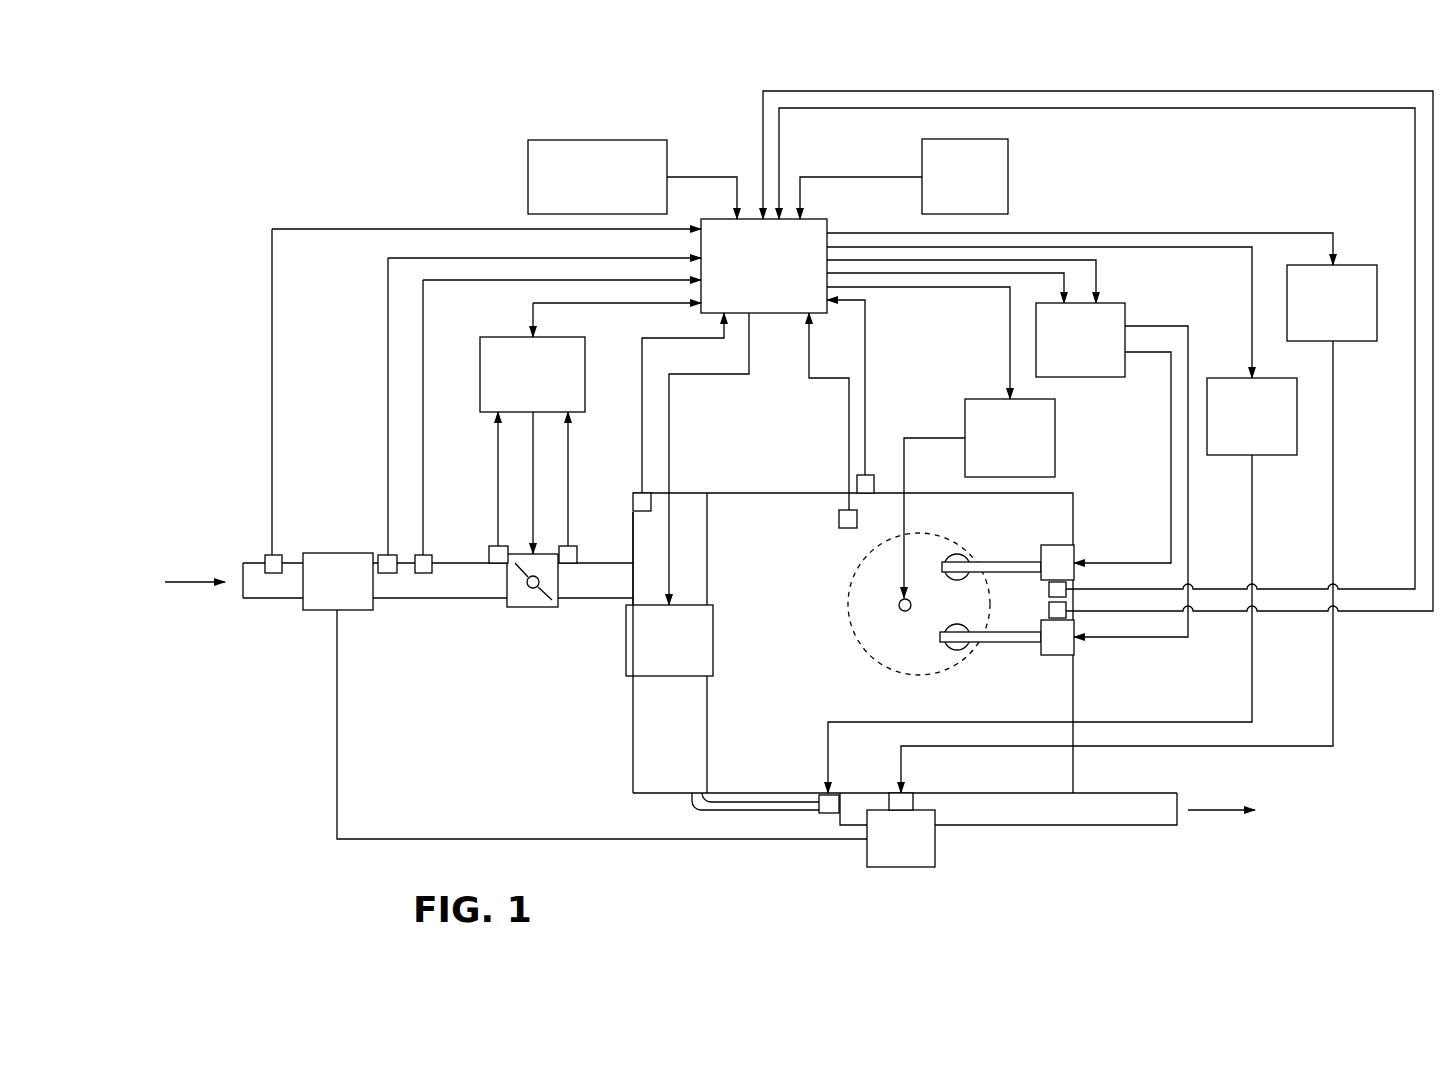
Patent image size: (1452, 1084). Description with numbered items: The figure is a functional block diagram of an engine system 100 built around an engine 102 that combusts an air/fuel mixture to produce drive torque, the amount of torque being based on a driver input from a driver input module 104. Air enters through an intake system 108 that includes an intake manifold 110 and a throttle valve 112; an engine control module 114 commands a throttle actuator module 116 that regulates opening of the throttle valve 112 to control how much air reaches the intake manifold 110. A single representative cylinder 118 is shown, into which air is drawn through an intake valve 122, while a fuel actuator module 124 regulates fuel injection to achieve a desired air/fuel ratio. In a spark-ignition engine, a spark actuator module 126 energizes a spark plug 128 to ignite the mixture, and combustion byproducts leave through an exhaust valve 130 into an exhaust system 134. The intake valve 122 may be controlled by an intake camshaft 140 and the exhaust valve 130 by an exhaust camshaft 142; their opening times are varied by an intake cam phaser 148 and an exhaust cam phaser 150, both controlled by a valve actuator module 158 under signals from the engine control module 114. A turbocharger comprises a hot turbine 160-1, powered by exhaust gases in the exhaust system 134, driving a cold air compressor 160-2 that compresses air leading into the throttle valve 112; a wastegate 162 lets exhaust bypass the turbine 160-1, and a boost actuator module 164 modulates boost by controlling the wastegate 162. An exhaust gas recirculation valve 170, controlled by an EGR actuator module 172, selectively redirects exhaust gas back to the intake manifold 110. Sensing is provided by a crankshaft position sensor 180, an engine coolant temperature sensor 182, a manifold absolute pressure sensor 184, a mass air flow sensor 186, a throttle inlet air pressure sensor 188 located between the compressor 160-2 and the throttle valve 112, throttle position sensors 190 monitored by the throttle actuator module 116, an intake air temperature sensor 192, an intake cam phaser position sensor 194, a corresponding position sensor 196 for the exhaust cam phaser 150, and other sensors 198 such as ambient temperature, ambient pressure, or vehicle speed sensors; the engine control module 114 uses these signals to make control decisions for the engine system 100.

The engine system 100 is at (206, 112).
The engine 102 is at (1075, 503).
The driver input module 104 is at (528, 177).
The intake system 108 is at (495, 727).
The intake manifold 110 is at (630, 735).
The throttle valve 112 is at (535, 607).
The engine control module 114 is at (827, 223).
The throttle actuator module 116 is at (501, 337).
The cylinder 118 is at (882, 665).
The intake valve 122 is at (945, 548).
The fuel actuator module 124 is at (695, 678).
The spark actuator module 126 is at (1055, 437).
The spark plug 128 is at (897, 608).
The exhaust valve 130 is at (958, 668).
The exhaust system 134 is at (1113, 867).
The intake camshaft 140 is at (1015, 562).
The exhaust camshaft 142 is at (1015, 642).
The intake cam phaser 148 is at (1057, 545).
The exhaust cam phaser 150 is at (1057, 655).
The valve actuator module 158 is at (1125, 318).
The hot turbine 160-1 is at (935, 848).
The cold air compressor 160-2 is at (320, 612).
The wastegate 162 is at (915, 795).
The boost actuator module 164 is at (1352, 341).
The exhaust gas recirculation valve 170 is at (827, 815).
The EGR actuator module 172 is at (1274, 456).
The crankshaft position sensor 180 is at (870, 475).
The engine coolant temperature sensor 182 is at (848, 528).
The manifold absolute pressure sensor 184 is at (633, 493).
The mass air flow sensor 186 is at (432, 558).
The throttle inlet air pressure sensor 188 is at (378, 558).
The throttle position sensor 190 is at (498, 565).
The intake air temperature sensor 192 is at (265, 558).
The intake cam phaser position sensor 194 is at (1049, 589).
The exhaust cam phaser position sensor 196 is at (1049, 613).
The other sensors 198 is at (1008, 175).